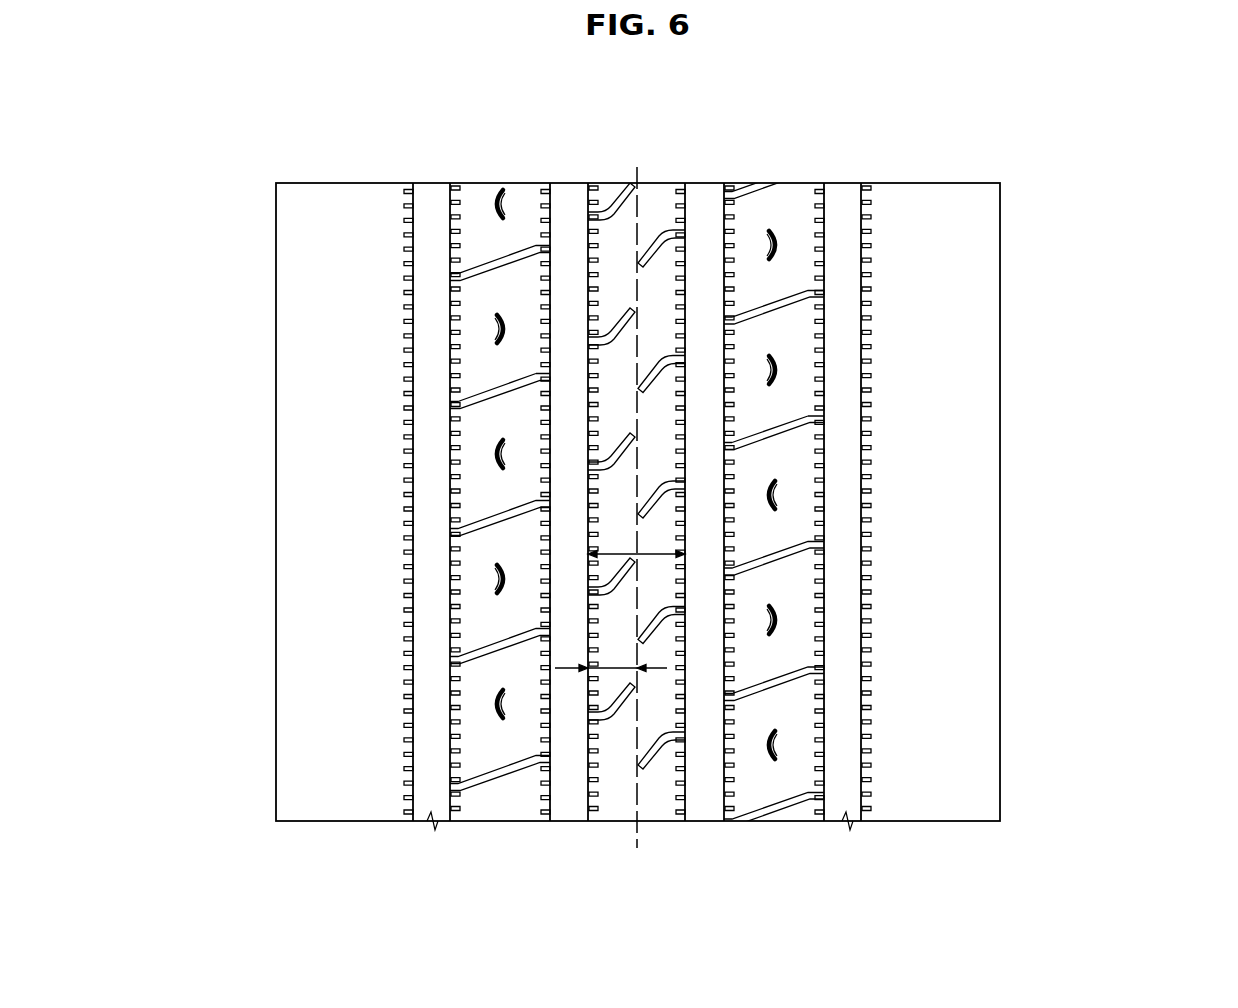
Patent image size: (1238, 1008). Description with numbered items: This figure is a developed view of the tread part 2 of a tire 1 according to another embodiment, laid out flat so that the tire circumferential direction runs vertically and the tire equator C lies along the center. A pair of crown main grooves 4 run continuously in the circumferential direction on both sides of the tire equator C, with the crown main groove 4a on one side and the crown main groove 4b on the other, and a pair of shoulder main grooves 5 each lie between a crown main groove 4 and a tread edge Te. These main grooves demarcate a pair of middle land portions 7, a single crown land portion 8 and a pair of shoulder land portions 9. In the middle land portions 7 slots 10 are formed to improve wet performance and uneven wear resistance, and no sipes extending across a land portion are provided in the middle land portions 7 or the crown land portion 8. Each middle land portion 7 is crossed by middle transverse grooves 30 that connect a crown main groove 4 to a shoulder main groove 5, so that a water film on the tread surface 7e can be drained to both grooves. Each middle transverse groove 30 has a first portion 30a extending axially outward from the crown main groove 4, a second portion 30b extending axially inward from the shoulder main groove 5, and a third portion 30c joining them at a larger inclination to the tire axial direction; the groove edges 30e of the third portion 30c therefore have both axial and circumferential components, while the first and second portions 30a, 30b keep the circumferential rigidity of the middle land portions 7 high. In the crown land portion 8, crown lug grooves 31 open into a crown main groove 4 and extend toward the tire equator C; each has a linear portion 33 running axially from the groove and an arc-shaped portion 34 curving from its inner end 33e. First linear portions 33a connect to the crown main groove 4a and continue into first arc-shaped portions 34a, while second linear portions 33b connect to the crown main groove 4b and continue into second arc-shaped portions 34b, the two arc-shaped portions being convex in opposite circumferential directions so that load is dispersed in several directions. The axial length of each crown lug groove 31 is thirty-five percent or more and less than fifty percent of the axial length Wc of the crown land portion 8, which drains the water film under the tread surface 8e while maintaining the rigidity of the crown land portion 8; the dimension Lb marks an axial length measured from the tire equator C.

The pneumatic tire 1 is at (1155, 168).
The tread part 2 is at (1085, 184).
The crown main groove 4 is at (570, 223).
The crown main groove on one side 4a is at (704, 502).
The crown main groove on the other side 4b is at (569, 502).
The shoulder main groove 5 is at (433, 218).
The middle land portion 7 is at (522, 206).
The tread surface of middle land portion 7e is at (637, 500).
The crown land portion 8 is at (652, 210).
The tread surface of crown land portion 8e is at (637, 554).
The shoulder land portion 9 is at (348, 217).
The slot 10 is at (498, 207).
The middle transverse groove 30 is at (166, 303).
The first portion 30a is at (546, 378).
The second portion 30b is at (457, 407).
The third portion 30c is at (500, 387).
The groove edge 30e is at (478, 404).
The crown lug groove 31 is at (625, 878).
The linear portion 33 is at (635, 534).
The first linear portion 33a is at (690, 733).
The second linear portion 33b is at (597, 727).
The inner end of linear portion 33e is at (595, 723).
The arc-shaped portion 34 is at (635, 532).
The first arc-shaped portion 34a is at (657, 755).
The second arc-shaped portion 34b is at (617, 703).
The tire equator C is at (636, 495).
The tread edge Te is at (276, 212).
The tire axial direction length Lb is at (612, 668).
The tire axial direction length of crown land portion Wc is at (652, 555).